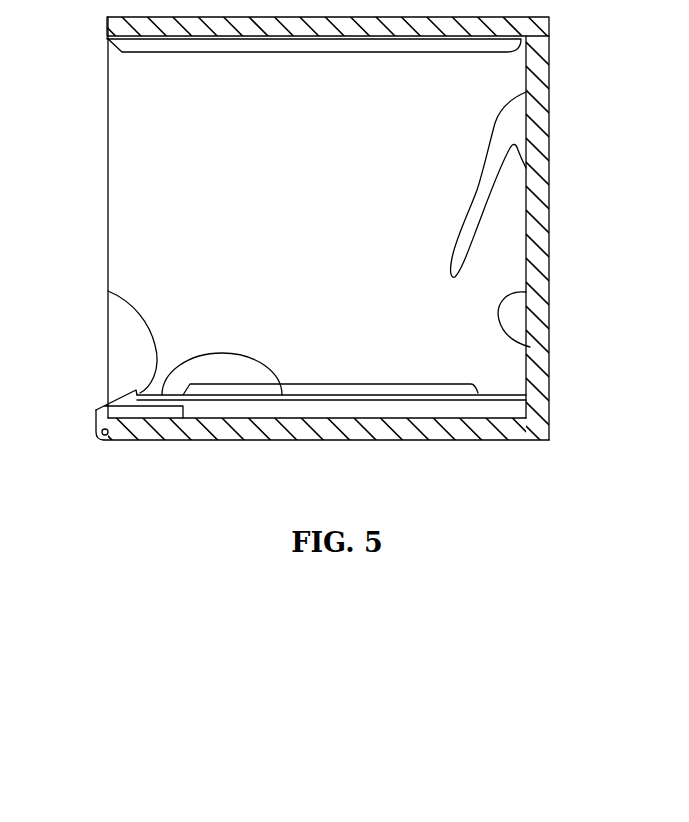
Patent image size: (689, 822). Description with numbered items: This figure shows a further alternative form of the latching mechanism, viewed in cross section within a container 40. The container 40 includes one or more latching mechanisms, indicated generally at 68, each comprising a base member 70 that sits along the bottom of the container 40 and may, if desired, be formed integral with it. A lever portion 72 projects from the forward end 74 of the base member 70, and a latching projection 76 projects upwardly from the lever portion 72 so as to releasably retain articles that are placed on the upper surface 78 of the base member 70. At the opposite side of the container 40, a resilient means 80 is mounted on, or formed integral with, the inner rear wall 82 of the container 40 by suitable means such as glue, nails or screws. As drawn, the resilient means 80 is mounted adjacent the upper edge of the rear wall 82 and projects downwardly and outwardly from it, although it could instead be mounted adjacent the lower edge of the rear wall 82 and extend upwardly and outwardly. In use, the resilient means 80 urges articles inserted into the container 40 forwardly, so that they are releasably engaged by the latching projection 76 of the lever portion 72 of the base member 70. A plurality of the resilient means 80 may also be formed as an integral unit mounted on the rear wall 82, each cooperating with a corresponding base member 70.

The container 40 is at (108, 62).
The latching mechanism 68 is at (210, 327).
The base member 70 is at (446, 438).
The lever portion 72 is at (150, 400).
The forward end 74 is at (188, 400).
The latching projection 76 is at (108, 291).
The upper surface 78 is at (282, 395).
The resilient means 80 is at (485, 202).
The inner rear wall 82 is at (530, 347).